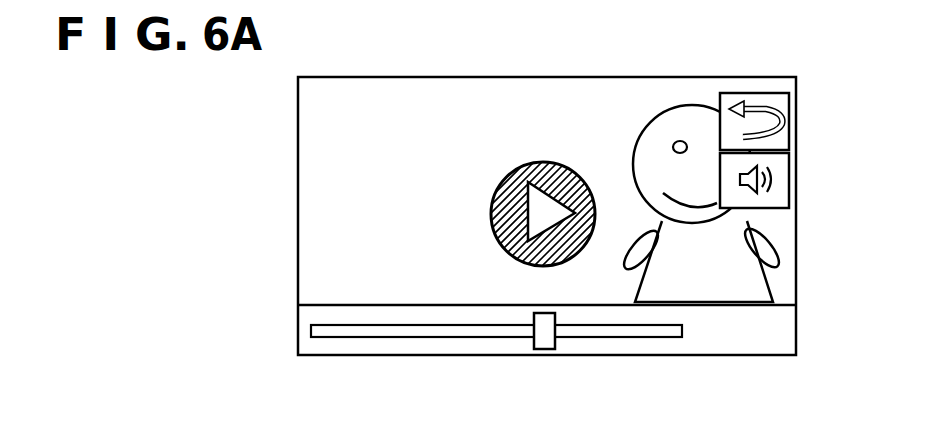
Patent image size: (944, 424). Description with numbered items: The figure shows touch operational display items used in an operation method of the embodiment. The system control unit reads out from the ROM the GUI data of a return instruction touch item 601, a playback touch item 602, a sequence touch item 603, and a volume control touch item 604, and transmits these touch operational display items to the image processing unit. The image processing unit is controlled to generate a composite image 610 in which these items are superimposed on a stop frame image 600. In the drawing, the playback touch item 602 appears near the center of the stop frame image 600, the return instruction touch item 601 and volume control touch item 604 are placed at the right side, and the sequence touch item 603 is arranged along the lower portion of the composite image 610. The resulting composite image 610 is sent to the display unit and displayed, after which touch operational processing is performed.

The stop frame image 600 is at (584, 77).
The return instruction touch item 601 is at (790, 108).
The playback touch item 602 is at (532, 161).
The sequence touch item 603 is at (585, 338).
The volume control touch item 604 is at (790, 173).
The composite image 610 is at (298, 272).